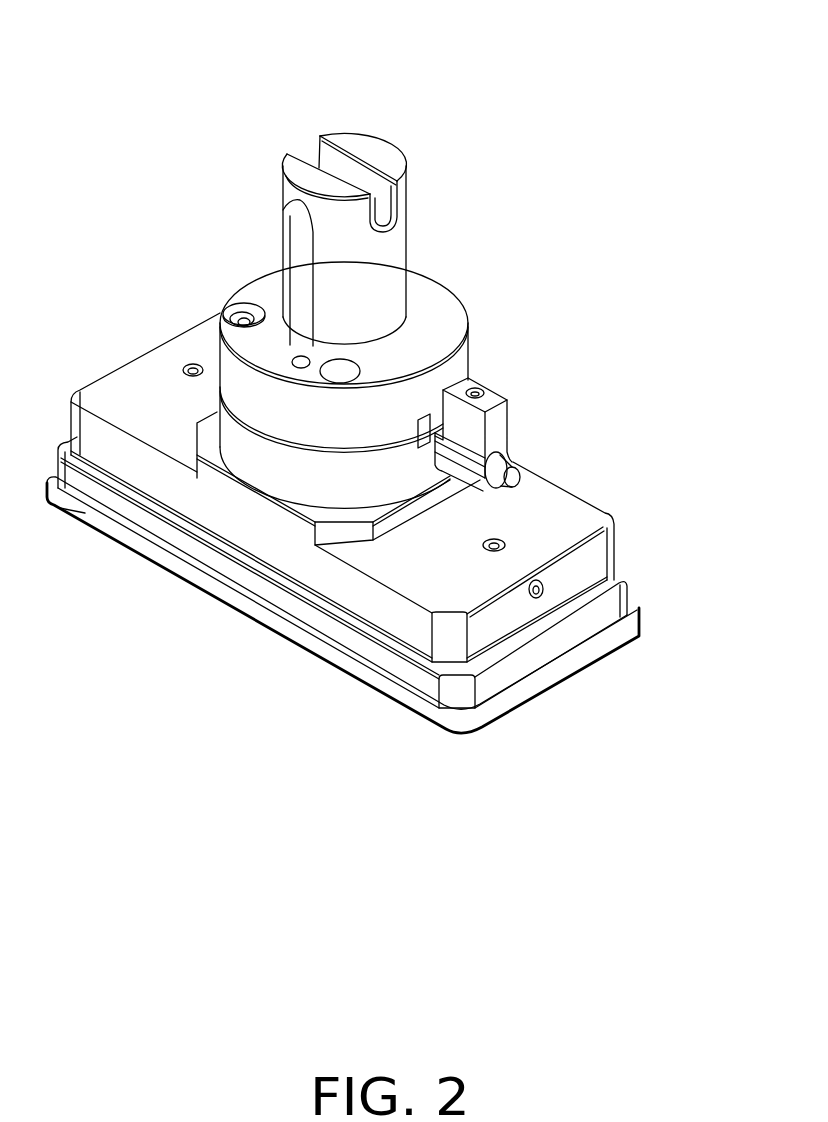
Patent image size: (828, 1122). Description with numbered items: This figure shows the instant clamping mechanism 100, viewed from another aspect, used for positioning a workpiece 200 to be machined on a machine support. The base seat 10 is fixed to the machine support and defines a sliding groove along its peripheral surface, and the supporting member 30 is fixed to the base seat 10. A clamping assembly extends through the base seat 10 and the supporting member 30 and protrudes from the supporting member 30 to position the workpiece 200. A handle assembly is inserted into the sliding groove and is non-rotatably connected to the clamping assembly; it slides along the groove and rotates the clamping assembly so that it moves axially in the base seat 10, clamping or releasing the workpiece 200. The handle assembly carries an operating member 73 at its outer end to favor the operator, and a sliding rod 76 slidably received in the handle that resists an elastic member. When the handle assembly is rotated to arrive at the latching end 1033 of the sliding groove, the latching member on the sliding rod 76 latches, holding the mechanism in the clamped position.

The instant clamping mechanism 100 is at (374, 384).
The base seat 10 is at (432, 295).
The latching end 1033 is at (422, 433).
The operating member 73 is at (536, 434).
The sliding rod 76 is at (520, 477).
The supporting member 30 is at (563, 510).
The workpiece 200 is at (580, 657).